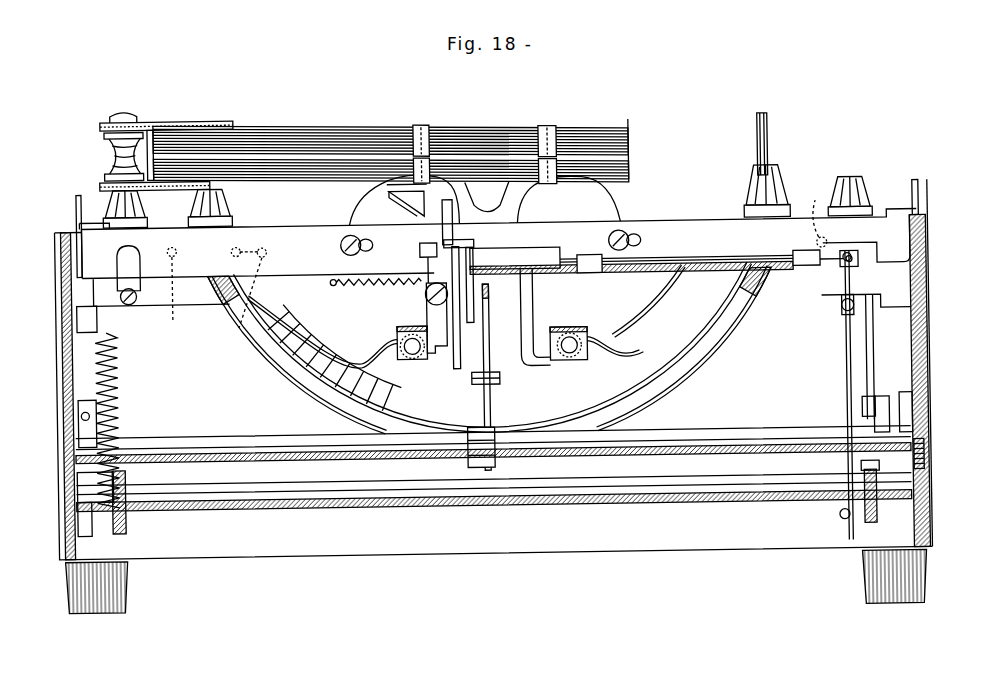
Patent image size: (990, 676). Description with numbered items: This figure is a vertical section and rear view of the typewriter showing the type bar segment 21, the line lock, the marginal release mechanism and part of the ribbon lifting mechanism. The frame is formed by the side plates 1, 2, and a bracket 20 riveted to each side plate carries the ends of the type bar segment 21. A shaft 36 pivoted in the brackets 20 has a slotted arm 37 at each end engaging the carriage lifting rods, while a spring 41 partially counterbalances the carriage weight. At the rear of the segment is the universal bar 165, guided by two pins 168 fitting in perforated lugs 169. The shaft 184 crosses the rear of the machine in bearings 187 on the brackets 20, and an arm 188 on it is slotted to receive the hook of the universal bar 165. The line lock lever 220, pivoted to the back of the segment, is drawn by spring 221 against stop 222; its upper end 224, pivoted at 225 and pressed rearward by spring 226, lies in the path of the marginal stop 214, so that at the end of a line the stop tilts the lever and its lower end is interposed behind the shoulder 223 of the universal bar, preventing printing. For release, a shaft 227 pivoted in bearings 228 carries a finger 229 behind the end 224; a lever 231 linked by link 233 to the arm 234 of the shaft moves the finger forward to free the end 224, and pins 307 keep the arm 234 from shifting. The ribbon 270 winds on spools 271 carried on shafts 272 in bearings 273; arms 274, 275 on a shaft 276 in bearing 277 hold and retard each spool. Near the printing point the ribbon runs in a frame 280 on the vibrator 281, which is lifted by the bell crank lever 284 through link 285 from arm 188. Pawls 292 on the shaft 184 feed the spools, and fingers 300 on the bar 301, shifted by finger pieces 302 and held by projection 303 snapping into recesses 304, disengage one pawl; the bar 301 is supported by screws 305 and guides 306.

The side plate 1 is at (930, 365).
The side plate 2 is at (63, 380).
The bracket 20 is at (60, 350).
The type bar segment 21 is at (585, 212).
The shaft 36 is at (322, 490).
The arm 37 is at (125, 515).
The spring 41 is at (118, 390).
The universal bar 165 is at (690, 340).
The pin 168 is at (576, 352).
The perforated lug 169 is at (576, 365).
The shaft 184 is at (740, 433).
The bearing 187 is at (78, 420).
The arm 188 is at (498, 428).
The marginal stop 214 is at (392, 191).
The lever 220 is at (428, 312).
The spring 221 is at (366, 348).
The stop 222 is at (430, 358).
The shoulder 223 is at (378, 386).
The upper end 224 is at (503, 204).
The pivot 225 is at (405, 283).
The spring 226 is at (422, 248).
The shaft 227 is at (718, 262).
The bearing 228 is at (598, 275).
The finger 229 is at (472, 243).
The lever 231 is at (838, 520).
The link 233 is at (862, 412).
The arm 234 is at (860, 265).
The ribbon 270 is at (634, 134).
The spool 271 is at (285, 121).
The shaft 272 is at (771, 135).
The bearing 273 is at (234, 205).
The arm 274 is at (184, 117).
The arm 275 is at (178, 185).
The shaft 276 is at (112, 145).
The bearing 277 is at (118, 198).
The frame 280 is at (556, 124).
The vibrator 281 is at (478, 308).
The bell crank lever 284 is at (502, 378).
The link 285 is at (492, 300).
The pawl 292 is at (867, 375).
The finger 300 is at (494, 262).
The bar 301 is at (668, 228).
The finger piece 302 is at (80, 192).
The projection 303 is at (234, 248).
The recess 304 is at (238, 303).
The screw 305 is at (348, 236).
The guide 306 is at (118, 262).
The pin 307 is at (846, 302).